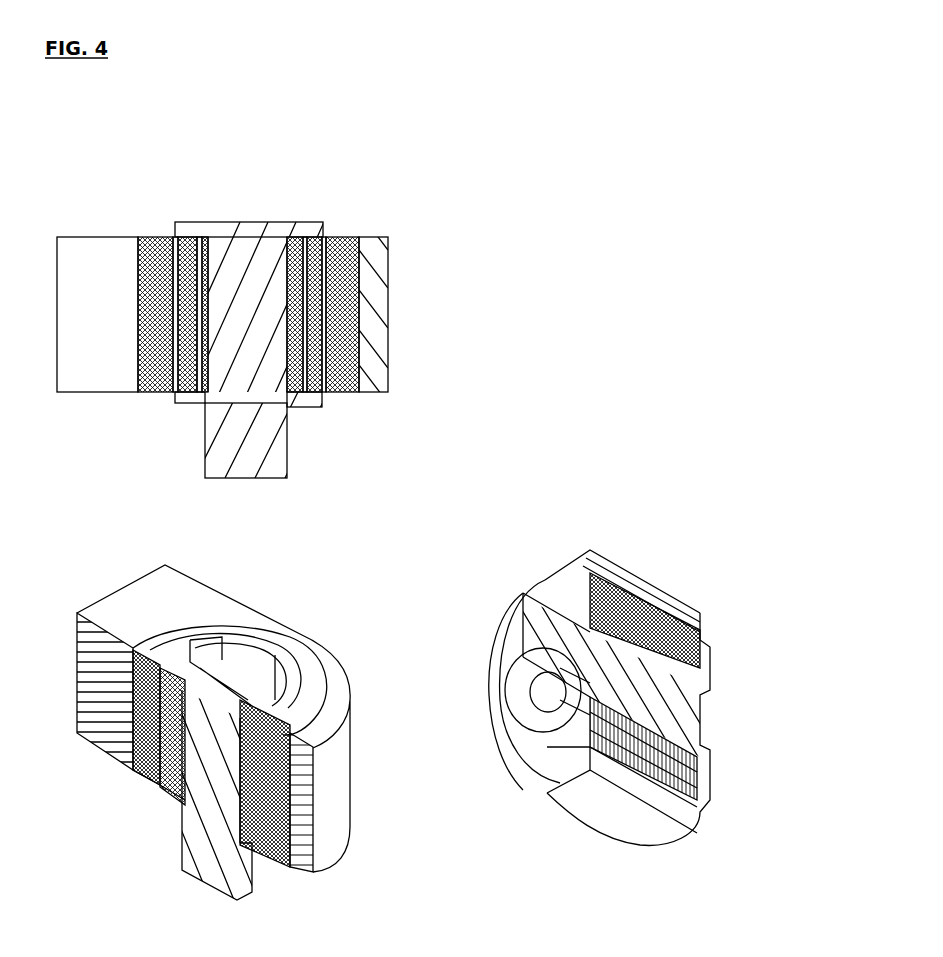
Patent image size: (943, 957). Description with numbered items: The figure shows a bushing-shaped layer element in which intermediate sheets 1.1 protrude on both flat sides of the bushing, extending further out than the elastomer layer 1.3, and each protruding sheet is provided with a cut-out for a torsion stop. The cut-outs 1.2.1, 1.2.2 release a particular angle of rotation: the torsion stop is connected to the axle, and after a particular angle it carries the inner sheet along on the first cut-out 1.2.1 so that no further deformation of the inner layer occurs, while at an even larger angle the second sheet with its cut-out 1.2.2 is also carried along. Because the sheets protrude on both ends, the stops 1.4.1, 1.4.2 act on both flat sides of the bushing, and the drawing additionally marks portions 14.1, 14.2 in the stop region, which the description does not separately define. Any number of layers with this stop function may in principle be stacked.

The intermediate sheets 1.1 is at (695, 795).
The first cut-out 1.2.1 is at (517, 670).
The second cut-out 1.2.2 is at (537, 708).
The elastomer layer 1.3 is at (590, 580).
The lower flange 1.4.1 is at (313, 405).
The upper flange 1.4.2 is at (213, 405).
The first receptacle 14.1 is at (530, 690).
The second receptacle 14.2 is at (710, 732).